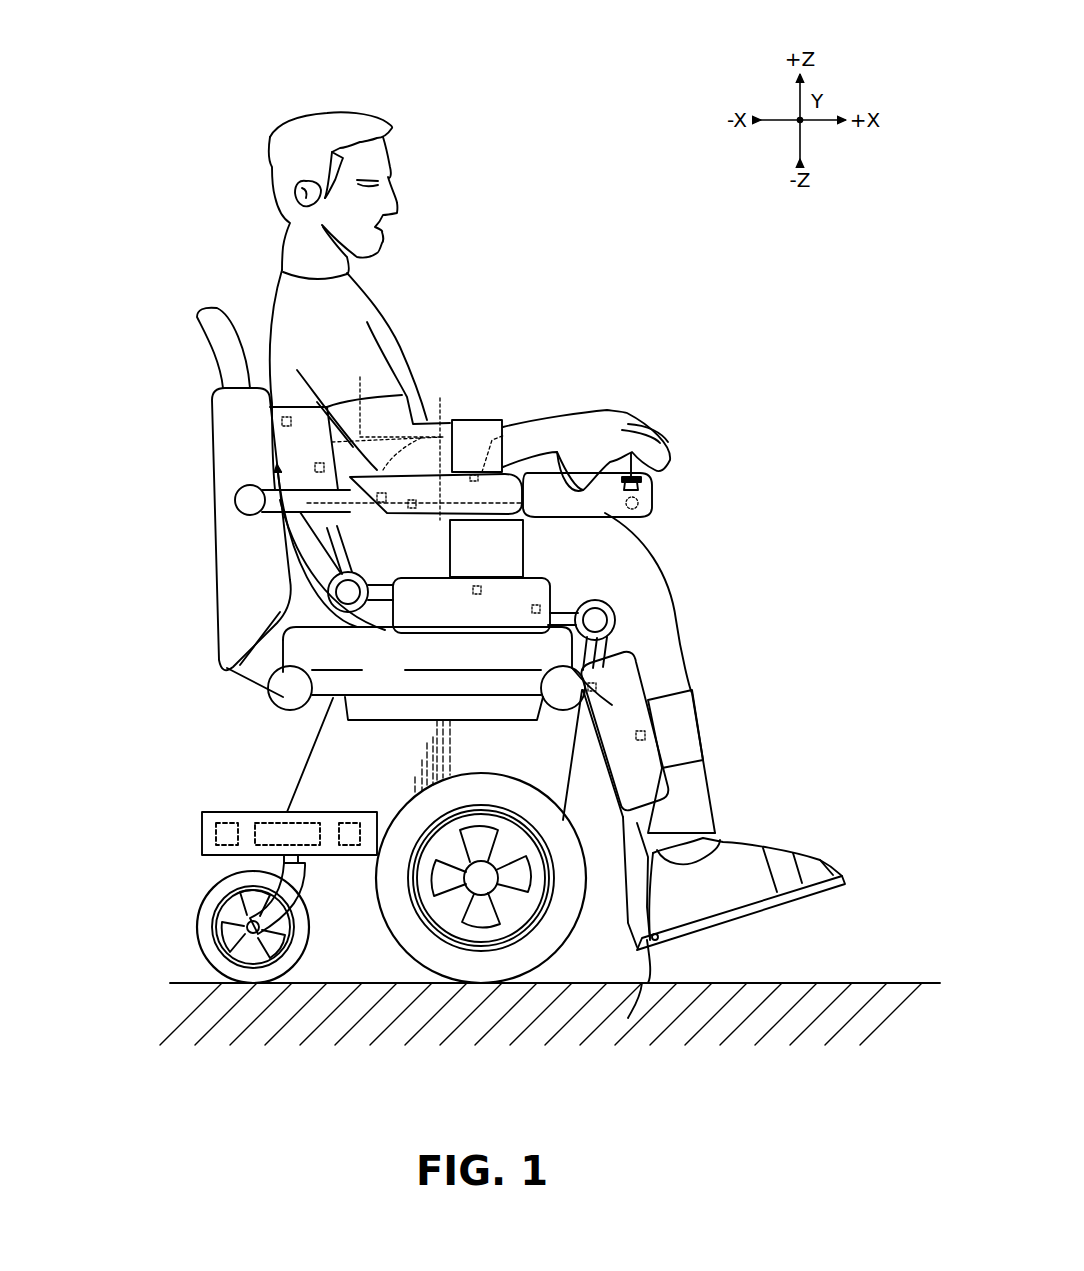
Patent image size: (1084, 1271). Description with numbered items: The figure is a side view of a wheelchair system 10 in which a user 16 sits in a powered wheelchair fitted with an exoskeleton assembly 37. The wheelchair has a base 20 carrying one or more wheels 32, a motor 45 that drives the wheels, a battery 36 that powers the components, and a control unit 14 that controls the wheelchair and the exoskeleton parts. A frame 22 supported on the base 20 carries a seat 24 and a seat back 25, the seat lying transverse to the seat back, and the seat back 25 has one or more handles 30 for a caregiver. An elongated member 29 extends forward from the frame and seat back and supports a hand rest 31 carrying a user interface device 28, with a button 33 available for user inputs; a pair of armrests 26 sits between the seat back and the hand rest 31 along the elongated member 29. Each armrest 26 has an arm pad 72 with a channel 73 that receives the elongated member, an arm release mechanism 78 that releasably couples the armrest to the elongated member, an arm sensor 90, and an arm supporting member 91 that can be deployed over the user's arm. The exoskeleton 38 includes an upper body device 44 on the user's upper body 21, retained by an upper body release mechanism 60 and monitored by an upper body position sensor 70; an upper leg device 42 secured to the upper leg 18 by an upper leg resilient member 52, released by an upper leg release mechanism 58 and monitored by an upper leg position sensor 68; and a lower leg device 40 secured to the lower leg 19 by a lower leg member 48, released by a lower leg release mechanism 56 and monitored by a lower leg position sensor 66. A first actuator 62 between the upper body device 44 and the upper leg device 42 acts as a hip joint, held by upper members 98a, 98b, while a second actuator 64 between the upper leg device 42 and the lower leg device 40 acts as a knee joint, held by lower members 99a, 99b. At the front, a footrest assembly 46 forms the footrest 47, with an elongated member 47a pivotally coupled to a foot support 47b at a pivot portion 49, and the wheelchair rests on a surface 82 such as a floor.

The wheelchair system 10 is at (683, 265).
The control unit 14 is at (260, 815).
The user 16 is at (522, 307).
The upper leg 18 is at (674, 673).
The lower leg 19 is at (695, 800).
The base 20 is at (150, 795).
The upper body 21 is at (398, 362).
The frame 22 is at (380, 702).
The seat 24 is at (266, 675).
The seat back 25 is at (230, 446).
The armrests 26 is at (324, 526).
The user interface device 28 is at (653, 480).
The elongated member 29 is at (227, 522).
The handles 30 is at (208, 318).
The hand rest 31 is at (636, 500).
The wheels 32 is at (483, 983).
The button 33 is at (640, 503).
The battery 36 is at (298, 858).
The exoskeleton assembly 37 is at (775, 433).
The exoskeleton 38 is at (795, 567).
The lower leg device 40 is at (597, 766).
The upper leg device 42 is at (462, 643).
The upper body device 44 is at (228, 482).
The motor 45 is at (348, 822).
The footrest assembly 46 is at (622, 932).
The footrest 47 is at (815, 885).
The elongated member 47a is at (634, 833).
The foot support 47b is at (658, 940).
The lower leg member 48 is at (680, 707).
The pivot portion 49 is at (632, 984).
The upper leg resilient member 52 is at (500, 533).
The lower leg release mechanism 56 is at (630, 672).
The upper leg release mechanism 58 is at (548, 600).
The upper body release mechanism 60 is at (280, 420).
The first actuator 62 is at (223, 610).
The second actuator 64 is at (583, 652).
The lower leg position sensor 66 is at (646, 735).
The upper leg position sensor 68 is at (481, 590).
The upper body position sensor 70 is at (392, 426).
The arm pad 72 is at (410, 505).
The channel 73 is at (468, 535).
The arm release mechanism 78 is at (440, 448).
The surface 82 is at (870, 983).
The arm sensor 90 is at (512, 420).
The arm supporting member 91 is at (485, 427).
The upper member 98a is at (293, 577).
The upper member 98b is at (426, 668).
The lower member 99a is at (565, 622).
The lower member 99b is at (598, 650).